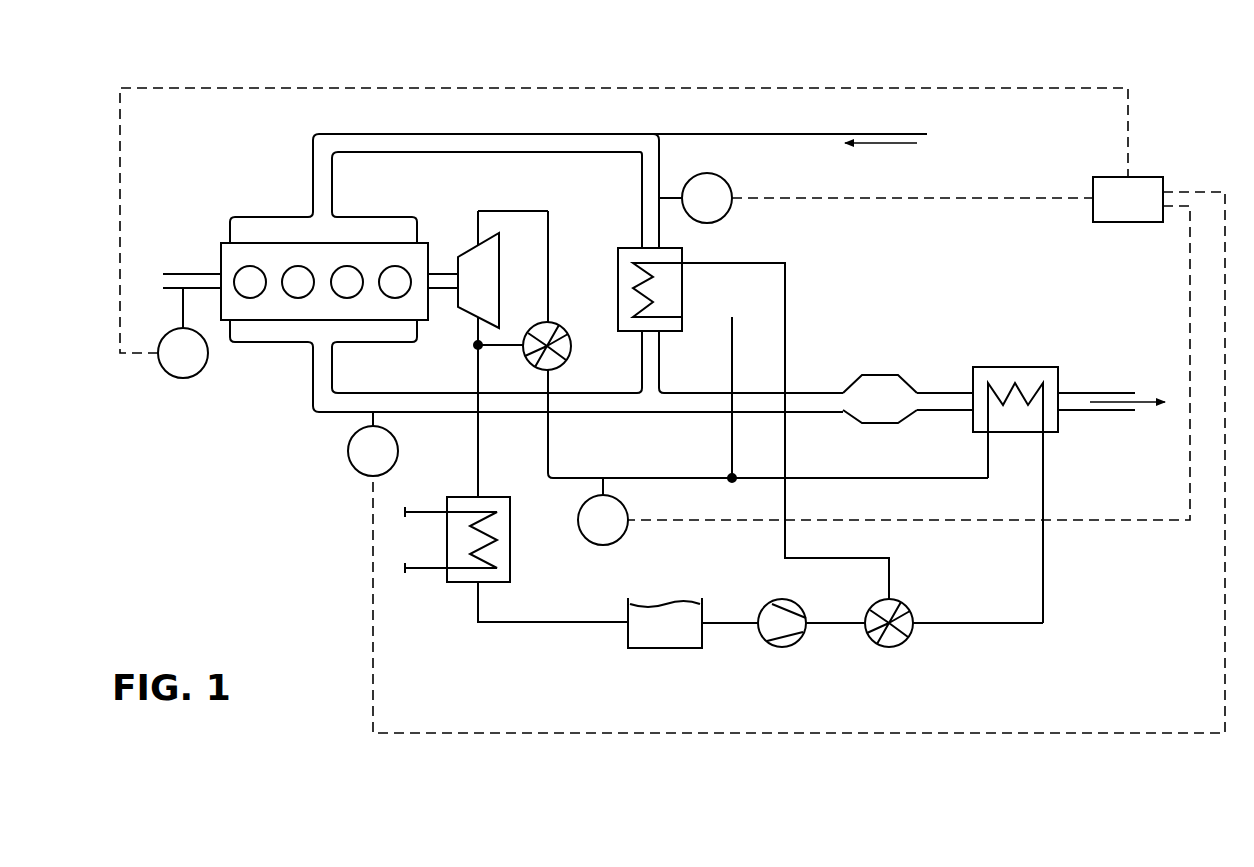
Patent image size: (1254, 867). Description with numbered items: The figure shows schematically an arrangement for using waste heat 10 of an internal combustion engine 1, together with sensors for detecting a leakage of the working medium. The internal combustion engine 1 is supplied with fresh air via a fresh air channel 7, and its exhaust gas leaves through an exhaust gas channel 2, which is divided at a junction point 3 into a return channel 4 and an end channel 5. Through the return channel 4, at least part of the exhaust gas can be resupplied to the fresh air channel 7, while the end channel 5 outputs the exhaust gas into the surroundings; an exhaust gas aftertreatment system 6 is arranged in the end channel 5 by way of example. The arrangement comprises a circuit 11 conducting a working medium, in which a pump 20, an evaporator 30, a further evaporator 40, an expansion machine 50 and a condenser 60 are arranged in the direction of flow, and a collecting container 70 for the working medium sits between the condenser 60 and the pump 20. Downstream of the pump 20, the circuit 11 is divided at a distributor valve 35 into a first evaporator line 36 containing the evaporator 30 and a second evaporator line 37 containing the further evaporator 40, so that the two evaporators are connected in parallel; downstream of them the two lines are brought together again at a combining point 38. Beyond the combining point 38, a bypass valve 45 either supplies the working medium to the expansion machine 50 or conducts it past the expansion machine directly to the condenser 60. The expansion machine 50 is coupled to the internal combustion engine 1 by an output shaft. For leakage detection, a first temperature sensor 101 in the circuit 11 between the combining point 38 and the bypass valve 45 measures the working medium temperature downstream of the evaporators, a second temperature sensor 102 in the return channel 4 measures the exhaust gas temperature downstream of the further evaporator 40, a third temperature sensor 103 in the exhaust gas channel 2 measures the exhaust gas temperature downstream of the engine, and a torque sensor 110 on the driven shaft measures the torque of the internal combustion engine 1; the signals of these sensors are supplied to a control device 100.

The internal combustion engine 1 is at (217, 251).
The exhaust gas channel 2 is at (313, 374).
The junction point 3 is at (650, 398).
The return channel 4 is at (650, 229).
The end channel 5 is at (945, 392).
The exhaust gas aftertreatment system 6 is at (878, 388).
The fresh air channel 7 is at (773, 142).
The arrangement for using waste heat 10 is at (243, 513).
The circuit 11 is at (588, 646).
The pump 20 is at (782, 648).
The evaporator 30 is at (1008, 378).
The distributor valve 35 is at (889, 648).
The first evaporator line 36 is at (967, 627).
The second evaporator line 37 is at (889, 568).
The combining point 38 is at (732, 483).
The further evaporator 40 is at (618, 268).
The bypass valve 45 is at (548, 322).
The expansion machine 50 is at (470, 257).
The condenser 60 is at (460, 578).
The collecting container 70 is at (672, 650).
The control device 100 is at (1110, 183).
The first temperature sensor 101 is at (586, 541).
The second temperature sensor 102 is at (732, 210).
The third temperature sensor 103 is at (348, 451).
The torque sensor 110 is at (183, 378).